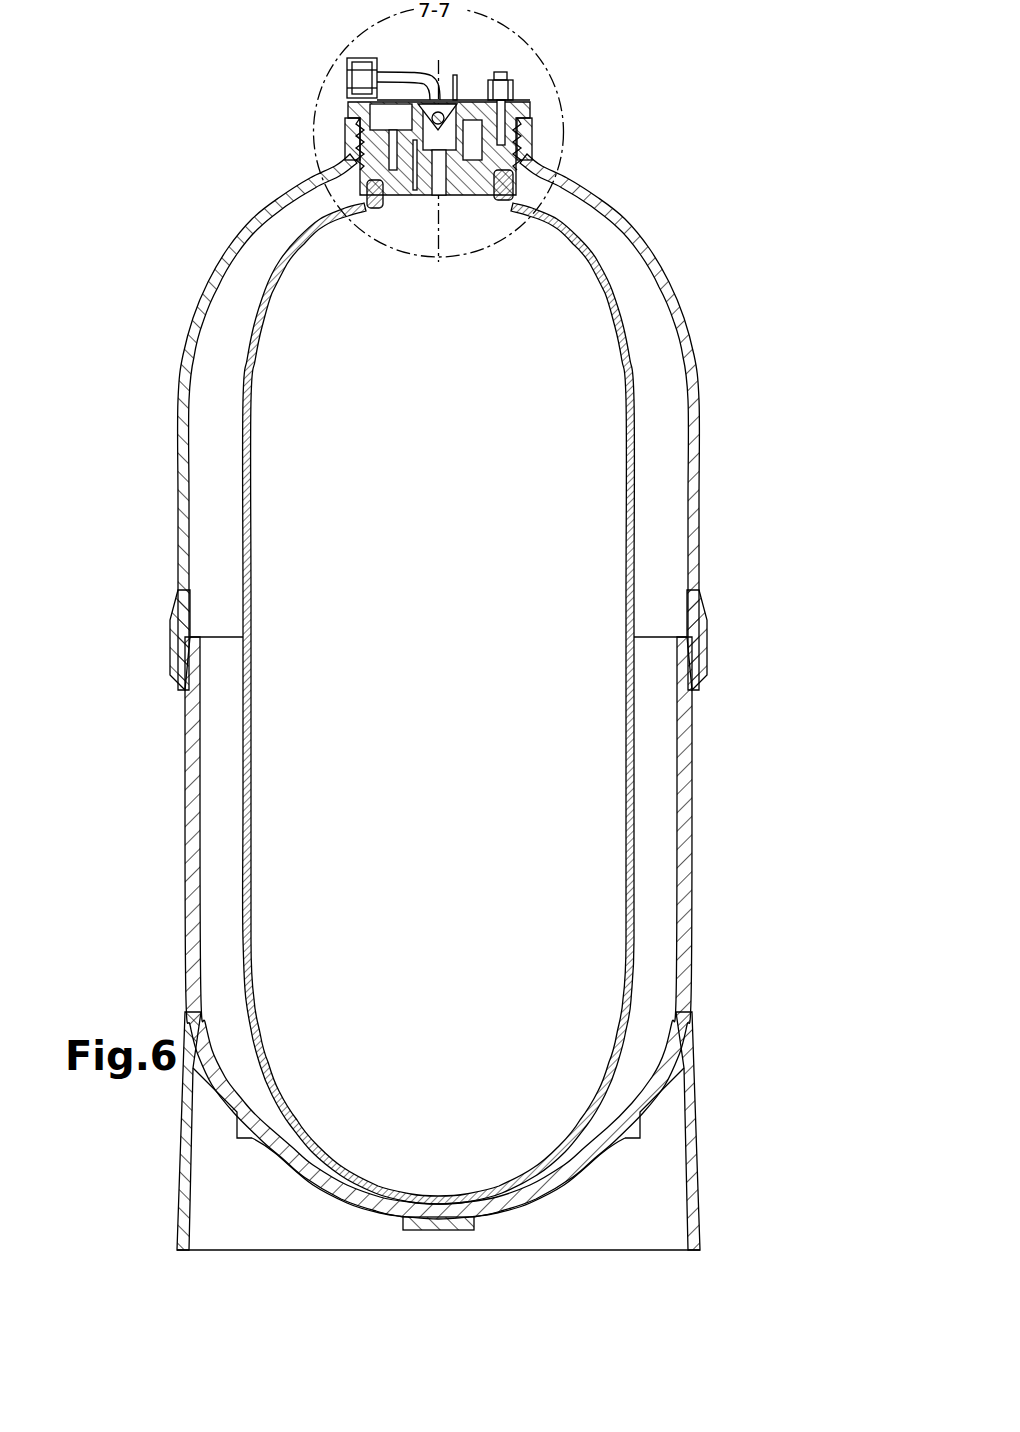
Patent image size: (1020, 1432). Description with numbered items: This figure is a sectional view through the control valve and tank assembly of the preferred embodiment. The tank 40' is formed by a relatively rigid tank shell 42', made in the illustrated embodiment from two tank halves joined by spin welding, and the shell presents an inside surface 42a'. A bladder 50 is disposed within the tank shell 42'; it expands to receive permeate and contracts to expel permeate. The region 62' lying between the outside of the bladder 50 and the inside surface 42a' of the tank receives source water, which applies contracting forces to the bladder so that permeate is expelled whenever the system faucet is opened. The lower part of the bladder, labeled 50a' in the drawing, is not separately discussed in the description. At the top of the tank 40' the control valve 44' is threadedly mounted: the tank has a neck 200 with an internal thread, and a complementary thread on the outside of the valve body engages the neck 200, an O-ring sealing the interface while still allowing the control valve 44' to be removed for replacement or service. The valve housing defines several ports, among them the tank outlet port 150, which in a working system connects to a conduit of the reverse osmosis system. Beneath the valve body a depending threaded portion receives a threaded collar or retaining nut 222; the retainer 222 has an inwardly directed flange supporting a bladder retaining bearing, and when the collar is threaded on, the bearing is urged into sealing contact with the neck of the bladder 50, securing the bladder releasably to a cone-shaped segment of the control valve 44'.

The tank 40' is at (468, 804).
The tank shell 42' is at (412, 422).
The inside surface 42a' is at (236, 422).
The region 62' is at (438, 521).
The bladder 50 is at (648, 512).
The lower shell portion 50a' is at (472, 928).
The control valve 44' is at (476, 102).
The tank outlet port 150 is at (348, 72).
The neck 200 is at (528, 142).
The retaining nut 222 is at (500, 193).